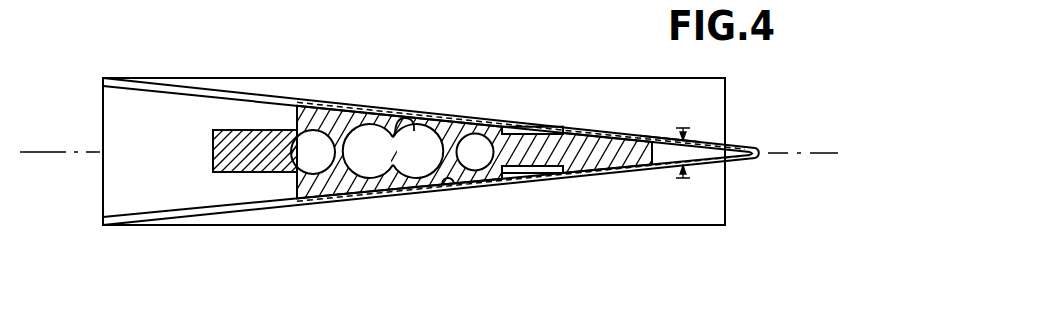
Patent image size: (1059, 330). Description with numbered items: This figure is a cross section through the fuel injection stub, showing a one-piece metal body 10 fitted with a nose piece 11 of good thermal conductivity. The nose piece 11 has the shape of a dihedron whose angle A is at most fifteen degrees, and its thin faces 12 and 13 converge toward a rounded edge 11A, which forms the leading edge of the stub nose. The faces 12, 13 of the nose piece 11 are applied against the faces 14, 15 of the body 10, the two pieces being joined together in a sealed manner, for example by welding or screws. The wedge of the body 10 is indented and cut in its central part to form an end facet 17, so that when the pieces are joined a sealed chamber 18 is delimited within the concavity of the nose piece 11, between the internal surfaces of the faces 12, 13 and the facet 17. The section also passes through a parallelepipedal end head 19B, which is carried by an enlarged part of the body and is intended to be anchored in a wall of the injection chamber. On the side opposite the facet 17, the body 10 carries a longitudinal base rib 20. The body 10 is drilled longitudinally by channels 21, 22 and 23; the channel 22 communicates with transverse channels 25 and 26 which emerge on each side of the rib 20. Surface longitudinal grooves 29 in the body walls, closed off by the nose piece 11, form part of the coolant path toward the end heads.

The body 10 is at (394, 148).
The nose piece 11 is at (610, 130).
The edge of the nose piece 11A is at (764, 152).
The face of the nose piece 12 is at (556, 182).
The face of the nose piece 13 is at (579, 137).
The face of the body 14 is at (456, 182).
The face of the body 15 is at (421, 125).
The end facet 17 is at (662, 140).
The sealed chamber 18 is at (666, 156).
The end head 19B is at (712, 213).
The longitudinal base rib 20 is at (231, 163).
The longitudinal channel 21 is at (313, 160).
The longitudinal channel 22 is at (413, 178).
The longitudinal channel 23 is at (463, 130).
The transverse channel 25 is at (318, 118).
The transverse channel 26 is at (333, 185).
The surface longitudinal groove 29 is at (512, 125).
The angle of the dihedron A is at (691, 165).